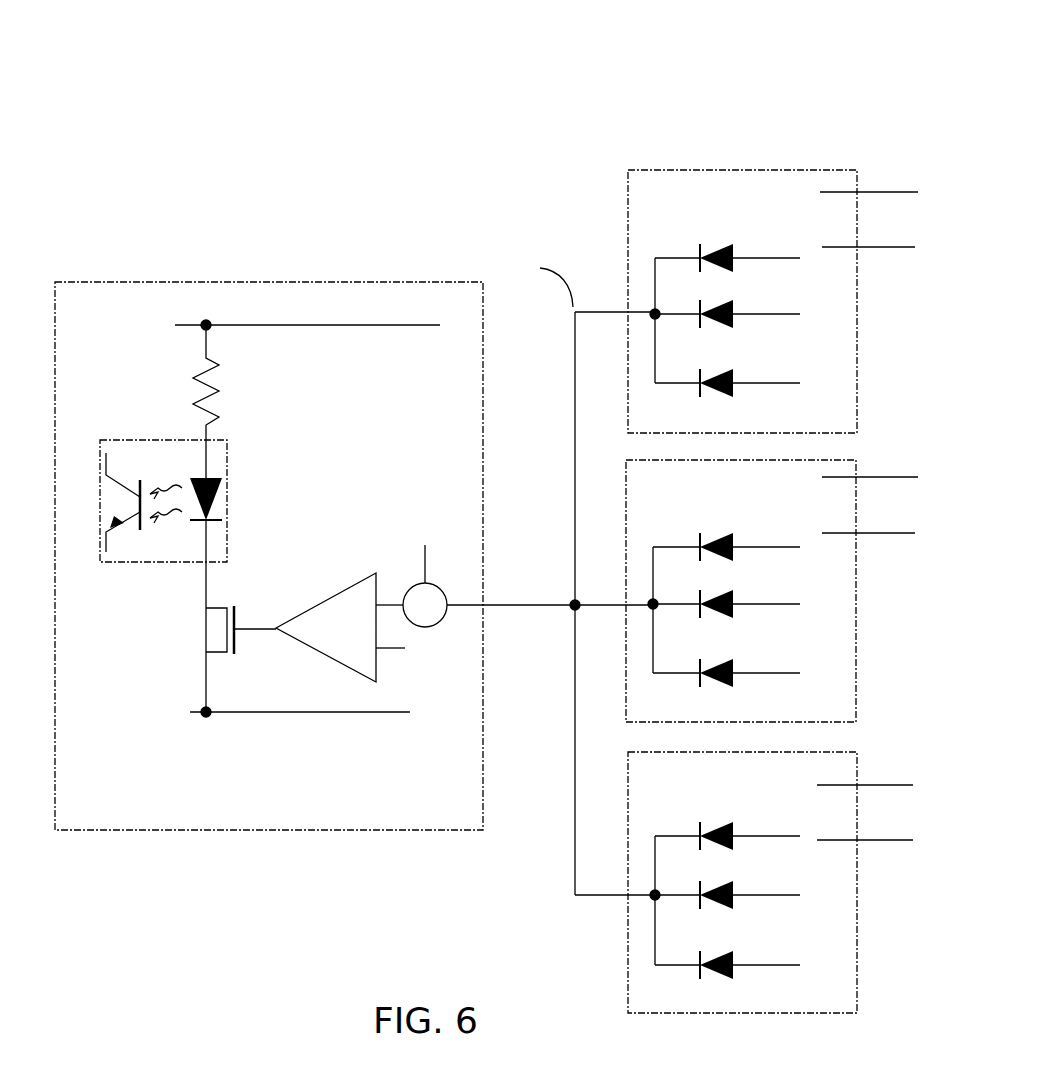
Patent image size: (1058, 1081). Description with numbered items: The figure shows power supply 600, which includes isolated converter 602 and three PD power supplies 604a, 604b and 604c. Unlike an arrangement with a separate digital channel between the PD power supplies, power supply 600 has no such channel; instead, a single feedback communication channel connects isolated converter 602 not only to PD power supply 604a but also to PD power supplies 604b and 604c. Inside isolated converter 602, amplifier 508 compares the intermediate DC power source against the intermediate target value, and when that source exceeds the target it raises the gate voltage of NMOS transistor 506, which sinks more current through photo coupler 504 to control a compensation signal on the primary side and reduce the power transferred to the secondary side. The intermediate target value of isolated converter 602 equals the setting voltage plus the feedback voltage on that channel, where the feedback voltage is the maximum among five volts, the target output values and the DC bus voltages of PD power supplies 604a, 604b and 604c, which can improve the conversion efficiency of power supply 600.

The power supply 600 is at (386, 84).
The isolated converter 602 is at (122, 366).
The photo coupler 504 is at (150, 563).
The NMOS transistor 506 is at (198, 629).
The amplifier 508 is at (343, 588).
The PD power supply 604a is at (720, 213).
The PD power supply 604b is at (718, 505).
The PD power supply 604c is at (712, 793).